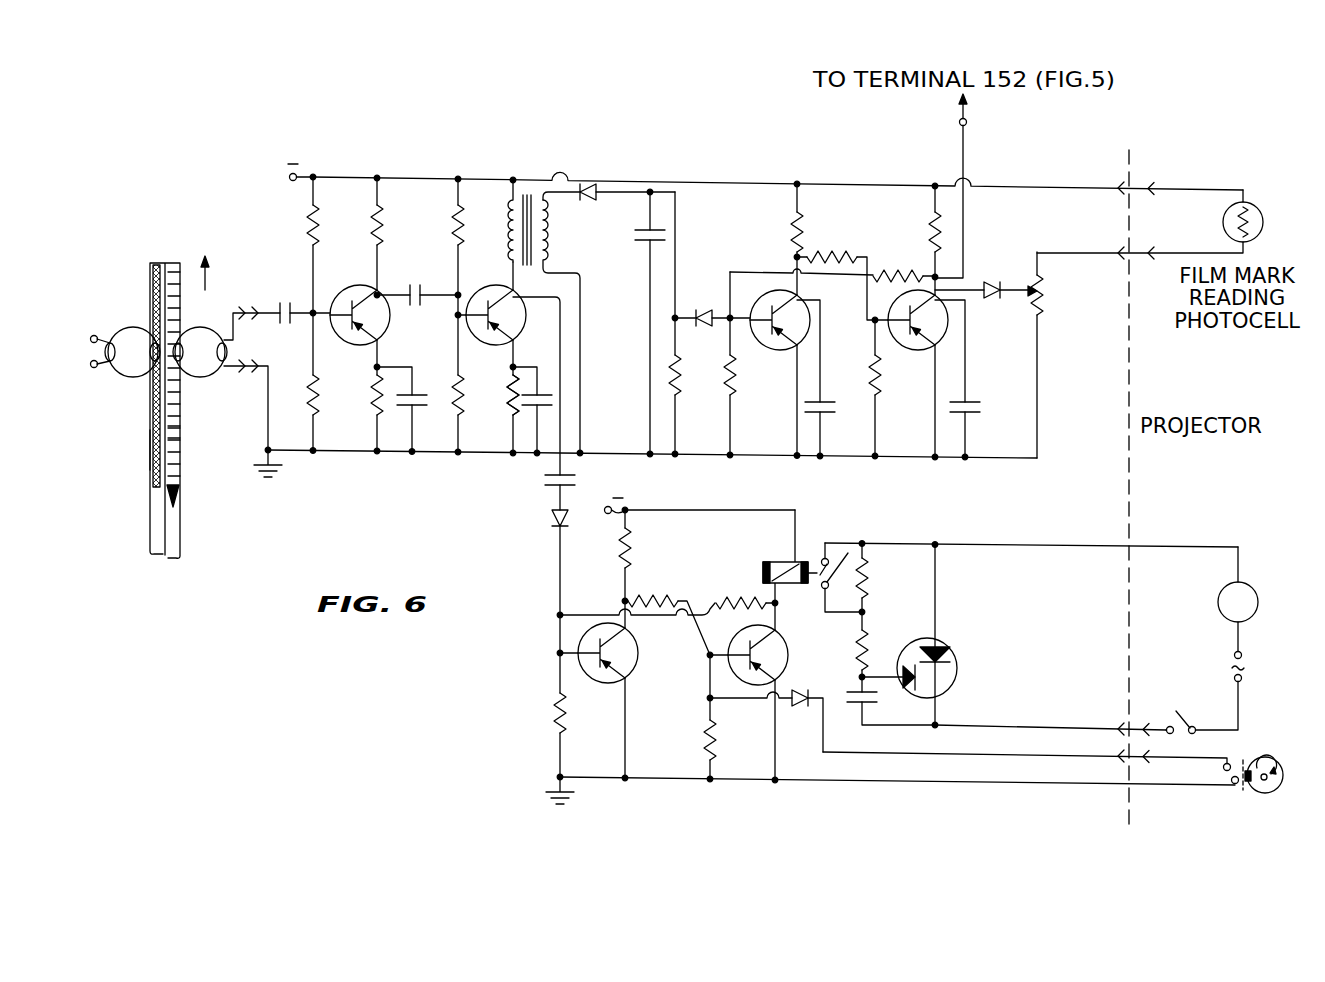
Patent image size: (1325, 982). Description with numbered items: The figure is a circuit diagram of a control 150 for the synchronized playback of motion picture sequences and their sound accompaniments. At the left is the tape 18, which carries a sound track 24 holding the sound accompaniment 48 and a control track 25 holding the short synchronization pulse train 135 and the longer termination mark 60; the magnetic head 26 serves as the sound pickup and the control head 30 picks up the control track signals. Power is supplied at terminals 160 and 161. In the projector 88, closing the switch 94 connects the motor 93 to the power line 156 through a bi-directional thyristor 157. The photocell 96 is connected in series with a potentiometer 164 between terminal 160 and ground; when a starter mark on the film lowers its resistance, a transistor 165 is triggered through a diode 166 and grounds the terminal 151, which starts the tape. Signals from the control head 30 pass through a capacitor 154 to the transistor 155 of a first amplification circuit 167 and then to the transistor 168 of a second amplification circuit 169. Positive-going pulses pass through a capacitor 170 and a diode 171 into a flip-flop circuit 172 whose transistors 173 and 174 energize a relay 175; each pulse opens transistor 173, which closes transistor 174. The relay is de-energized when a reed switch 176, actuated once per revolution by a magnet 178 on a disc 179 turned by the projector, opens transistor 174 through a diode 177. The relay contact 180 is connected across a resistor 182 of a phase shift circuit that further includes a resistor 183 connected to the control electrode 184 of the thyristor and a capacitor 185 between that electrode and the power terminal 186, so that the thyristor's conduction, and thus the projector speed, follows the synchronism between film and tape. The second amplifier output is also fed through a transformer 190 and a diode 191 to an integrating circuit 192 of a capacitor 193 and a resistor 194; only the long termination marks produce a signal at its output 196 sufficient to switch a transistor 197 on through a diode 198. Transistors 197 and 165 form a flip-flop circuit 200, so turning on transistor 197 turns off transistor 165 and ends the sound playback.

The tape 18 is at (176, 558).
The sound track 24 is at (159, 263).
The control track 25 is at (178, 264).
The first magnetic recording head 26 is at (133, 328).
The control head 30 is at (200, 378).
The sound accompaniment 48 is at (152, 441).
The termination mark 60 is at (180, 494).
The pulse train 135 is at (168, 442).
The control 150 is at (755, 303).
The terminal 151 is at (967, 122).
The capacitor 154 is at (286, 302).
The transistor 155 is at (358, 280).
The thyristor 157 is at (957, 664).
The terminal 160 is at (290, 181).
The terminal 161 is at (606, 515).
The potentiometer 164 is at (1042, 306).
The transistor 165 is at (933, 349).
The diode 166 is at (993, 279).
The first amplification circuit 167 is at (419, 278).
The transistor 168 is at (480, 340).
The second amplification circuit 169 is at (502, 316).
The capacitor 170 is at (545, 479).
The diode 171 is at (550, 516).
The flip-flop circuit 172 is at (897, 690).
The transistor 173 is at (615, 681).
The transistor 174 is at (746, 633).
The relay 175 is at (778, 562).
The switch 176 is at (1224, 778).
The diode 177 is at (797, 707).
The magnet 178 is at (1245, 789).
The disc 179 is at (1275, 760).
The relay contact 180 is at (853, 527).
The resistor 182 is at (867, 577).
The resistor 183 is at (857, 651).
The control electrode 184 is at (890, 696).
The capacitor 185 is at (856, 686).
The power terminal 186 is at (938, 716).
The transformer 190 is at (528, 163).
The diode 191 is at (581, 188).
The integrating circuit 192 is at (661, 299).
The capacitor 193 is at (636, 237).
The resistor 194 is at (678, 392).
The output 196 is at (679, 317).
The transistor 197 is at (789, 350).
The diode 198 is at (720, 322).
The flip-flop circuit 200 is at (834, 320).
The projector 88 is at (1223, 490).
The motor 93 is at (1258, 601).
The switch 94 is at (1190, 728).
The photocell 96 is at (1264, 218).
The power line 156 is at (1243, 657).